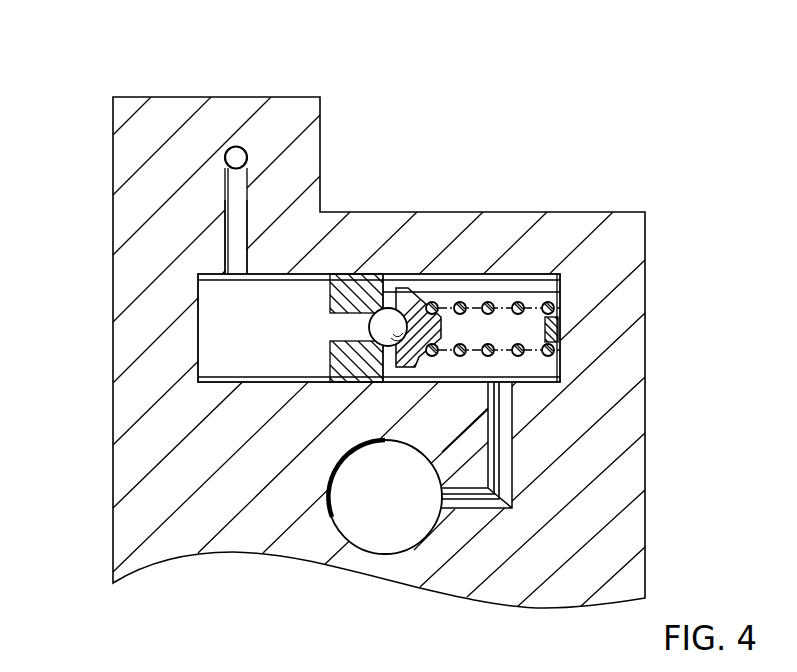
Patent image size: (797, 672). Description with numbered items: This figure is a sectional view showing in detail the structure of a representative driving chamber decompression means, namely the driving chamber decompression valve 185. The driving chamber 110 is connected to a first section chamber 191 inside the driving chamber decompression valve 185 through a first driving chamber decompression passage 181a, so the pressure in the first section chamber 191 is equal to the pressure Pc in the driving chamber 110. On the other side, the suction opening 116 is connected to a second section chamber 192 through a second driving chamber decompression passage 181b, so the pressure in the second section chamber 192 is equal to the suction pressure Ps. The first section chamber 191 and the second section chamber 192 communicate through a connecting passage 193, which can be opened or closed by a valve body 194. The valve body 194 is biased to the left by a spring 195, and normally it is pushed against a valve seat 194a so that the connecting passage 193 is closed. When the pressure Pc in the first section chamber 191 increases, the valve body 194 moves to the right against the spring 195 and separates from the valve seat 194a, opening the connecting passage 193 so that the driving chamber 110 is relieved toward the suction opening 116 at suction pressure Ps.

The driving chamber 110 is at (236, 150).
The first driving chamber decompression passage 181a is at (244, 216).
The first section chamber 191 is at (222, 290).
The connecting passage 193 is at (338, 326).
The valve seat 194a is at (355, 285).
The valve body 194 is at (397, 305).
The spring 195 is at (463, 302).
The second section chamber 192 is at (521, 288).
The driving chamber decompression valve 185 is at (572, 302).
The second driving chamber decompression passage 181b is at (497, 473).
The suction opening 116 is at (373, 526).